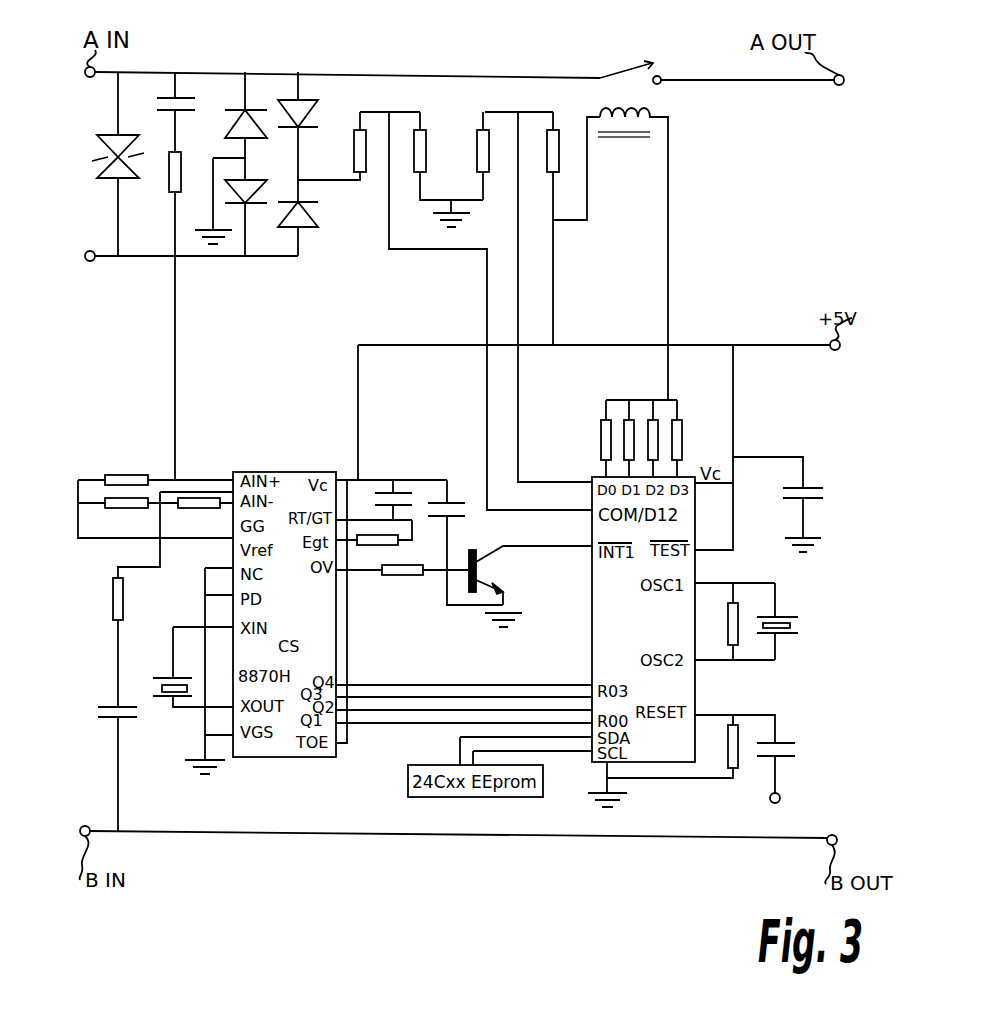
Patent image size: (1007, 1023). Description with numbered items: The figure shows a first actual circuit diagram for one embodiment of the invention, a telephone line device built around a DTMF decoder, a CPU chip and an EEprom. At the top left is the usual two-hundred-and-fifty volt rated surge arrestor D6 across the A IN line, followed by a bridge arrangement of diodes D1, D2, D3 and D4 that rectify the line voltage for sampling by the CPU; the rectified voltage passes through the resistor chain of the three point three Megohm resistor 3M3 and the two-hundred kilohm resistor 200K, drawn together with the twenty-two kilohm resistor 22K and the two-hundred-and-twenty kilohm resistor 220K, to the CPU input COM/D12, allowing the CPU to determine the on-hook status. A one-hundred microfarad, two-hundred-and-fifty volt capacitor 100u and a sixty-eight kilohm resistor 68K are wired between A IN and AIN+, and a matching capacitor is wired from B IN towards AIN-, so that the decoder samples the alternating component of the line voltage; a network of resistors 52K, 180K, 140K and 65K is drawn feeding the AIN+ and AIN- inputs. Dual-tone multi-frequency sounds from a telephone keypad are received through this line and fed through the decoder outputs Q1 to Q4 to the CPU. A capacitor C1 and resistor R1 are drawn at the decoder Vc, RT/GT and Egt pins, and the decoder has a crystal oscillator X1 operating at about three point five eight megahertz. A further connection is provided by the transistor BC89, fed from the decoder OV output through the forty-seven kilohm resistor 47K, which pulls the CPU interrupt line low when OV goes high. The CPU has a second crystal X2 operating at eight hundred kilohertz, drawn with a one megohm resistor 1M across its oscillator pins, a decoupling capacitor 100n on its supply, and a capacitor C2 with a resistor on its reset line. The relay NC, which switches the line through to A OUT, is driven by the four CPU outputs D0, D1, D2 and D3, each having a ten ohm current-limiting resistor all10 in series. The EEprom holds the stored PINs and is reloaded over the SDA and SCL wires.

The surge arrestor D6 is at (106, 140).
The 100 uF 250 V capacitor 100u is at (157, 106).
The 68K resistor 68K is at (182, 160).
The diode D1 is at (258, 103).
The diode D2 is at (318, 98).
The diode D3 is at (258, 210).
The diode D4 is at (320, 200).
The 3.3 Megohm resistor 3M3 is at (360, 174).
The 200K ohm resistor 200K is at (442, 162).
The 22K resistor 22K is at (480, 130).
The 220K resistor 220K is at (558, 132).
The relay NC is at (643, 83).
The 100n capacitor 100n is at (775, 498).
The ten ohm current-limiting resistor all10 is at (668, 420).
The 1M resistor 1M is at (733, 648).
The second crystal X2 is at (800, 616).
The capacitor C2 is at (798, 744).
The resistor R1 is at (730, 770).
The 52K resistor 52K is at (144, 476).
The 180K resistor 180K is at (148, 510).
The 140K resistor 140K is at (220, 510).
The 65K resistor 65K is at (112, 600).
The crystal oscillator X1 is at (158, 676).
The capacitor C1 is at (376, 492).
The 47K resistor 47K is at (382, 576).
The transistor BC89 is at (468, 598).